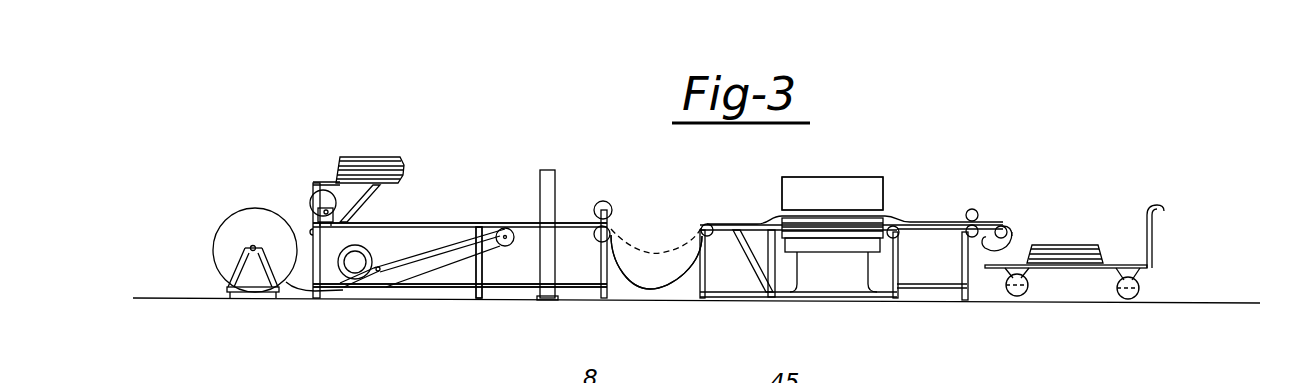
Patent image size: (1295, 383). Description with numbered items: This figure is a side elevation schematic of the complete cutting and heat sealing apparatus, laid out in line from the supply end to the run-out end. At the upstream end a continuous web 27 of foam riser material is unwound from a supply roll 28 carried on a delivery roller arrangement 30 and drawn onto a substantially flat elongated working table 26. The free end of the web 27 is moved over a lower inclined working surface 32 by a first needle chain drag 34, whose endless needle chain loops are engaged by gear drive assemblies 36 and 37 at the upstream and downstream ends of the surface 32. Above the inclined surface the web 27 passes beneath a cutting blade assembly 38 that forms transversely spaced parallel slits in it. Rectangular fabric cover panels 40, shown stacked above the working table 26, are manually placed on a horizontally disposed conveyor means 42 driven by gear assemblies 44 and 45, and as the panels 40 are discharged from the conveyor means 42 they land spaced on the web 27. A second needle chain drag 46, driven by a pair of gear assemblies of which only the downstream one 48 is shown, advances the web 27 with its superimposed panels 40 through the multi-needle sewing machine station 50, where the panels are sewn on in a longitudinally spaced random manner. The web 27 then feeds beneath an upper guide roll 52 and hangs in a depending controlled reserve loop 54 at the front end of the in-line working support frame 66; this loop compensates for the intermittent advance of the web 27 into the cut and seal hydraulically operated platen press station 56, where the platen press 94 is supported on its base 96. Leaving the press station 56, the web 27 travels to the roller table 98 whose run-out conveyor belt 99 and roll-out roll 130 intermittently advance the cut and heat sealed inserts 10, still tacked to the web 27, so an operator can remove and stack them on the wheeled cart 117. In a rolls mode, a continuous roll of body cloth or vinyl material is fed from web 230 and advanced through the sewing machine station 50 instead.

The cut and heat sealed inserts 10 is at (1099, 237).
The working table 26 is at (493, 297).
The continuous web 27 is at (295, 291).
The supply roll 28 is at (226, 222).
The delivery roller arrangement 30 is at (232, 265).
The lower inclined working surface 32 is at (431, 268).
The first needle chain drag 34 is at (445, 262).
The gear drive assembly 36 is at (357, 292).
The gear drive assembly 37 is at (510, 245).
The cutting blade assembly 38 is at (366, 262).
The fabric cover panels 40 is at (386, 157).
The conveyor means 42 is at (422, 222).
The gear assembly 44 is at (311, 229).
The gear assembly 45 is at (503, 228).
The second needle chain drag 46 is at (570, 232).
The gear assembly 48 is at (594, 234).
The multi-needle sewing machine station 50 is at (553, 169).
The upper guide roll 52 is at (604, 201).
The controlled reserve loop 54 is at (667, 295).
The platen press station 56 is at (842, 167).
The in-line working support frame 66 is at (713, 283).
The platen press 94 is at (887, 198).
The base 96 is at (872, 276).
The roller table 98 is at (945, 294).
The conveyor belt 99 is at (1003, 250).
The wheeled cart 117 is at (1159, 248).
The roll-out roll 130 is at (976, 211).
The web 230 is at (312, 203).